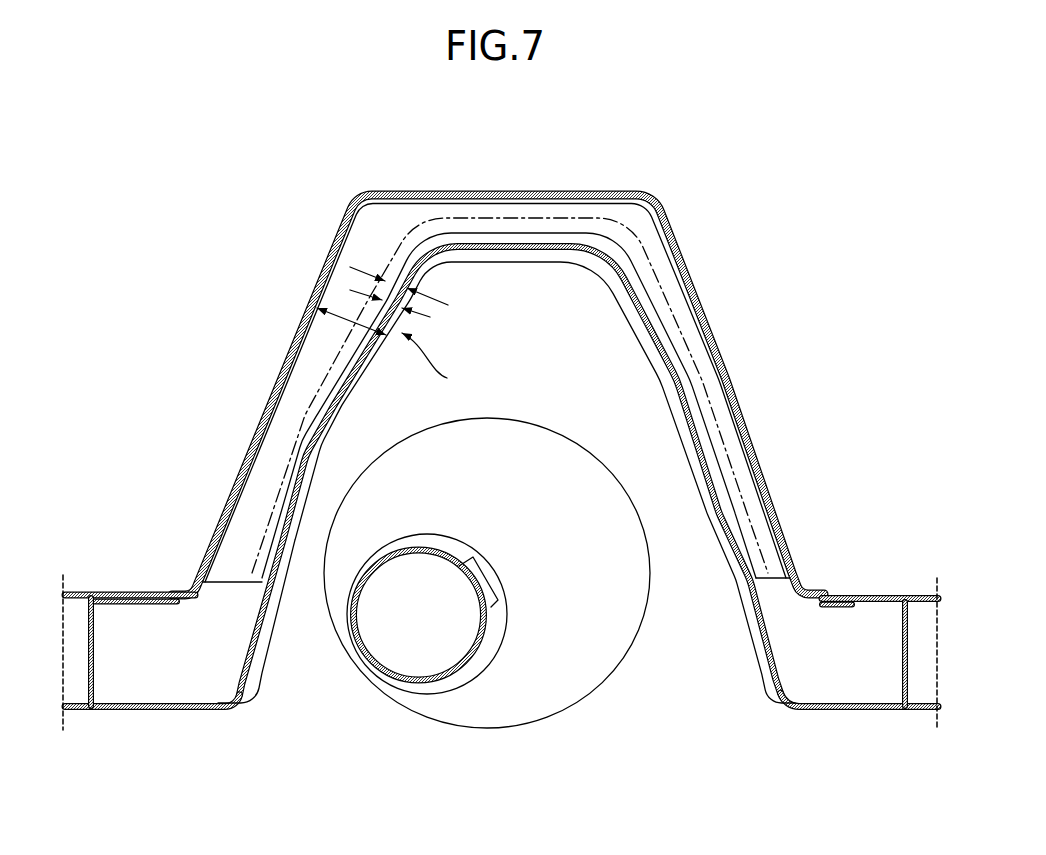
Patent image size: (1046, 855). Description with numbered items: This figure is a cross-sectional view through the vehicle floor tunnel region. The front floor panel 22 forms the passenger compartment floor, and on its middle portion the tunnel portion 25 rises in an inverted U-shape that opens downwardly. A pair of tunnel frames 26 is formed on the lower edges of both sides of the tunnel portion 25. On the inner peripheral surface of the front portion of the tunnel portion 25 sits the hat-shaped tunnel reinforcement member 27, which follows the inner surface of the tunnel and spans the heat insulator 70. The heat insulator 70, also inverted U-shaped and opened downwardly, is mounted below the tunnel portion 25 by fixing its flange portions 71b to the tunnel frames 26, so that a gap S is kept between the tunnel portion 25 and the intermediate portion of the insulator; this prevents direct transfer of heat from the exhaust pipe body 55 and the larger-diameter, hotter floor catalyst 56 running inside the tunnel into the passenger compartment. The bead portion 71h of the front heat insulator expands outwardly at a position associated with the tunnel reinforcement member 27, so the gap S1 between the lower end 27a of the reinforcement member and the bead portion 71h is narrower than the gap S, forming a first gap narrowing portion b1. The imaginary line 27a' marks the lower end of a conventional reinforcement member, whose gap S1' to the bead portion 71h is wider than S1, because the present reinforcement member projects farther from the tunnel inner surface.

The front floor panel 22 is at (80, 592).
The tunnel portion 25 is at (645, 191).
The tunnel frame 26 is at (93, 688).
The tunnel reinforcement member 27 is at (388, 225).
The lower end of the tunnel reinforcement member 27a is at (509, 356).
The lower end of a conventional tunnel reinforcement member 27a' is at (510, 342).
The exhaust pipe body 55 is at (417, 681).
The floor catalyst 56 is at (525, 728).
The heat insulator 70 is at (759, 632).
The flange portion 71b is at (178, 710).
The bead portion 71h is at (668, 362).
The gap S is at (350, 322).
The gap S1 is at (405, 319).
The gap S1' is at (423, 294).
The first gap narrowing portion b1 is at (440, 365).